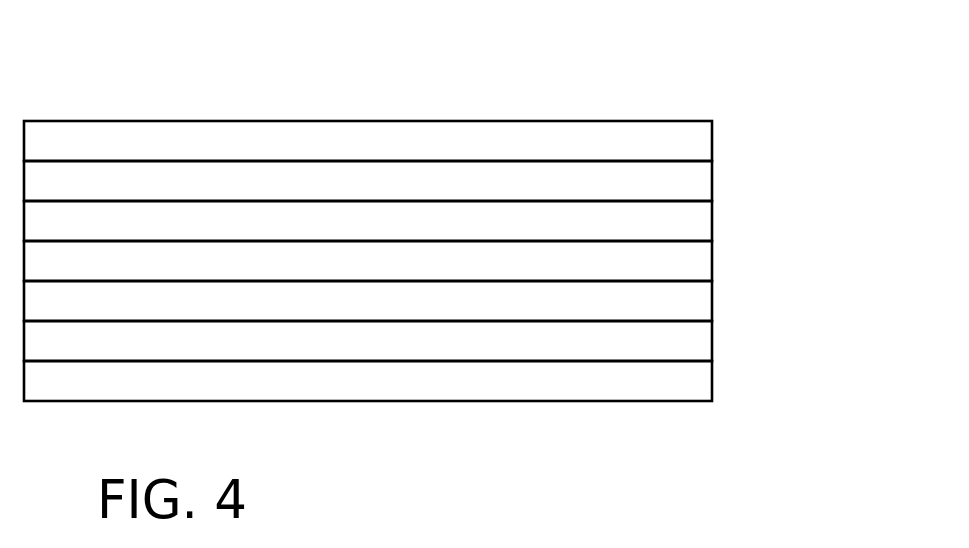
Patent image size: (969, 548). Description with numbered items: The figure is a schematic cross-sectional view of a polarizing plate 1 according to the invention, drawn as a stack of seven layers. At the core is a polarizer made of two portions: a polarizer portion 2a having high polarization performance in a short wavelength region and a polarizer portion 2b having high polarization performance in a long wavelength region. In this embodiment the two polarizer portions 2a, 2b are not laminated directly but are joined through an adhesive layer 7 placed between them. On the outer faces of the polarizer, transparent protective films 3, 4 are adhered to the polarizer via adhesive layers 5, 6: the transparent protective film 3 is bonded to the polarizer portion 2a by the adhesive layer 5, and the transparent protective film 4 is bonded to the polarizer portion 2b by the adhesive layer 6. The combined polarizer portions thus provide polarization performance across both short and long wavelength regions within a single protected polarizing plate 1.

The polarizing plate 1 is at (444, 207).
The transparent protective film 3 is at (713, 133).
The adhesive layer 5 is at (713, 192).
The polarizer portion 2a is at (713, 227).
The adhesive layer 7 is at (713, 262).
The polarizer portion 2b is at (713, 300).
The adhesive layer 6 is at (713, 337).
The transparent protective film 4 is at (713, 373).